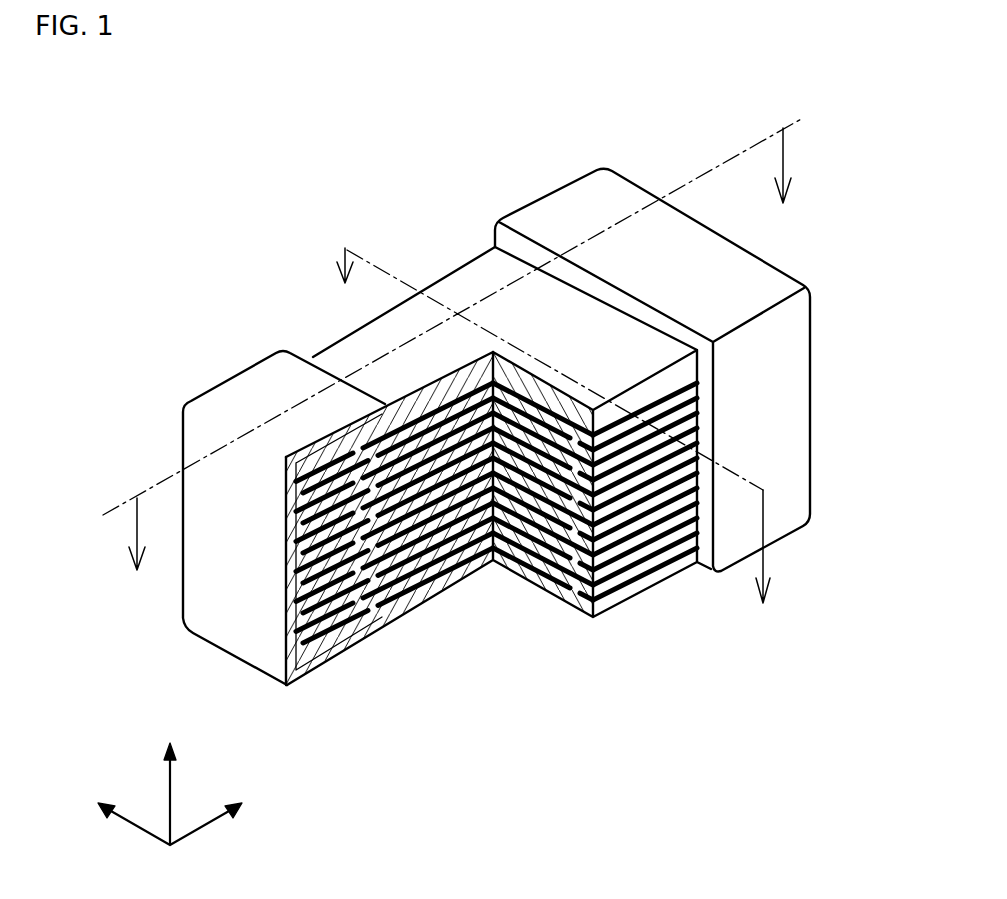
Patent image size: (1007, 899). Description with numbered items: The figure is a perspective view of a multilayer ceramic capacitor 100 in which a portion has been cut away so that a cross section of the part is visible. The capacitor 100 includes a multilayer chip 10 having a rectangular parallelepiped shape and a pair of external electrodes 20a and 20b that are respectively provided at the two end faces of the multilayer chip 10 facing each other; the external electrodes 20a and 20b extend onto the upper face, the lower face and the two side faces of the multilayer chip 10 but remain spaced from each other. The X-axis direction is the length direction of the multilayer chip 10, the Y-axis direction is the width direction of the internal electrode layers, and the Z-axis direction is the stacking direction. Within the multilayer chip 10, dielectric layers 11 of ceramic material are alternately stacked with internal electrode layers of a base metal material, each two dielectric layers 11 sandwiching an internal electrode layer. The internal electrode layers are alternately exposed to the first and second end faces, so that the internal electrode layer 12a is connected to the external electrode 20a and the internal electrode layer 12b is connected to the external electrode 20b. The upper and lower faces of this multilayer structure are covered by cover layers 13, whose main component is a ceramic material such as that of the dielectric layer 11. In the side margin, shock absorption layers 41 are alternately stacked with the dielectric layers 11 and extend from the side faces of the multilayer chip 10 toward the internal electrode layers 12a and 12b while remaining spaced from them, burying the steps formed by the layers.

The multilayer ceramic capacitor 100 is at (915, 103).
The multilayer chip 10 is at (327, 337).
The dielectric layer 11 is at (427, 550).
The internal electrode layer 12a is at (383, 573).
The internal electrode layer 12b is at (453, 520).
The cover layer 13 is at (460, 290).
The external electrode 20a is at (213, 393).
The external electrode 20b is at (555, 215).
The shock absorption layer 41 is at (615, 577).